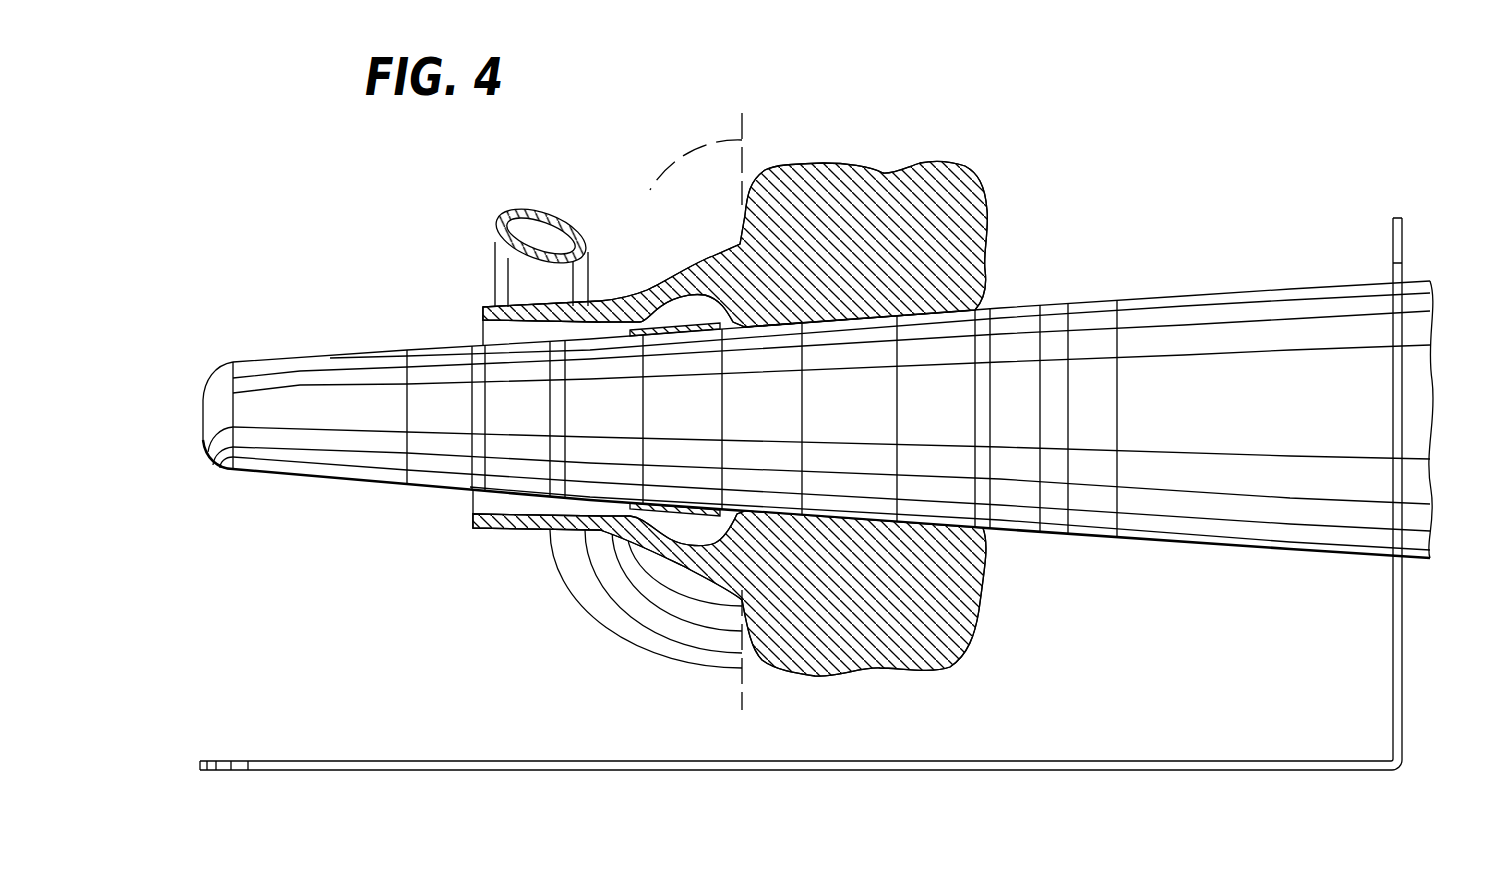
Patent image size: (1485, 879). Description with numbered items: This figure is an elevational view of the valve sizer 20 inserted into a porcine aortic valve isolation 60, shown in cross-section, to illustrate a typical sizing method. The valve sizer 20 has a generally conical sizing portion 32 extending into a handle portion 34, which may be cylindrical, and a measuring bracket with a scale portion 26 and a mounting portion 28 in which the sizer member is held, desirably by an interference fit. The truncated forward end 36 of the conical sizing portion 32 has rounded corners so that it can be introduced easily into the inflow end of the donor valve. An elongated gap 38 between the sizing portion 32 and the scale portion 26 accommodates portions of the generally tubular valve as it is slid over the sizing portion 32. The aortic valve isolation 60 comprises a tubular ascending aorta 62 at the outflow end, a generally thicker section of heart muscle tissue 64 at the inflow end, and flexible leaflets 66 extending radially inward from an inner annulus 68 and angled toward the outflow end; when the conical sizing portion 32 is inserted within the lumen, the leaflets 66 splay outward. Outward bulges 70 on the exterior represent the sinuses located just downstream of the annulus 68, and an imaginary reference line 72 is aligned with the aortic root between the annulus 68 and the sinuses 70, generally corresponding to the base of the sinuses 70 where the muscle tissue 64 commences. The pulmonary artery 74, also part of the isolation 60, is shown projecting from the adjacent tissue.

The valve sizer 20 is at (1279, 224).
The scale portion 26 is at (1185, 760).
The mounting portion 28 is at (1400, 683).
The conical sizing portion 32 is at (1008, 302).
The handle portion 34 is at (1408, 288).
The truncated forward end 36 is at (200, 414).
The elongated gap 38 is at (348, 707).
The aortic valve isolation 60 is at (795, 143).
The tubular ascending aorta 62 is at (492, 531).
The heart muscle tissue 64 is at (930, 680).
The flexible leaflets 66 is at (672, 333).
The inner annulus 68 is at (770, 328).
The outward bulges 70 is at (688, 578).
The reference line 72 is at (689, 411).
The pulmonary artery 74 is at (495, 253).